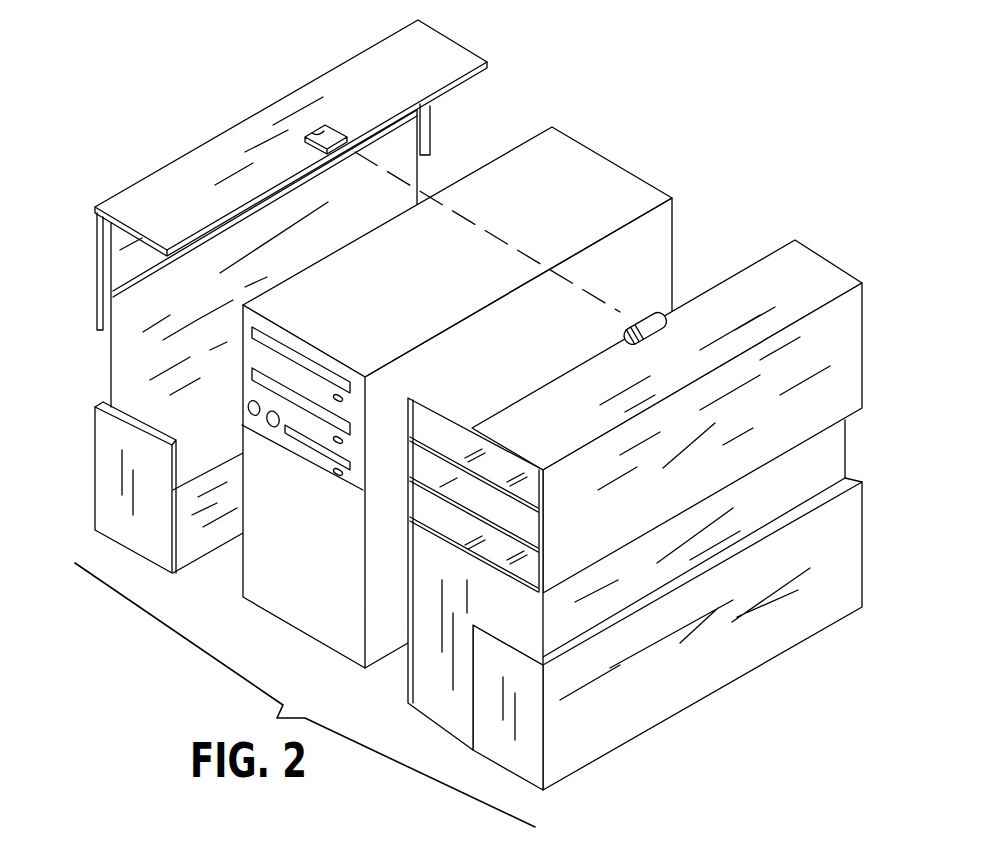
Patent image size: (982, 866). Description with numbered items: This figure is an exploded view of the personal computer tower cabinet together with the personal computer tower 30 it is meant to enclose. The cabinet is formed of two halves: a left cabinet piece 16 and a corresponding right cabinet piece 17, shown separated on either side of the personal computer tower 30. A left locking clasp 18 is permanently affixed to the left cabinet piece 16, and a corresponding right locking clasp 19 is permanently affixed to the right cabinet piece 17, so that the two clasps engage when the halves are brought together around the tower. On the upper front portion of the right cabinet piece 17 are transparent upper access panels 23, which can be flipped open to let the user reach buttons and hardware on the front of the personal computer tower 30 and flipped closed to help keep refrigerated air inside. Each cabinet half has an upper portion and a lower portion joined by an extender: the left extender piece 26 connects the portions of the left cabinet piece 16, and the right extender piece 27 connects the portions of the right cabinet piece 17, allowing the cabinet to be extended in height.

The left cabinet piece 16 is at (134, 530).
The right cabinet piece 17 is at (635, 703).
The left locking clasp 18 is at (308, 126).
The right locking clasp 19 is at (657, 328).
The upper access panels 23 is at (470, 453).
The left extender piece 26 is at (110, 352).
The right extender piece 27 is at (434, 698).
The personal computer tower 30 is at (605, 172).